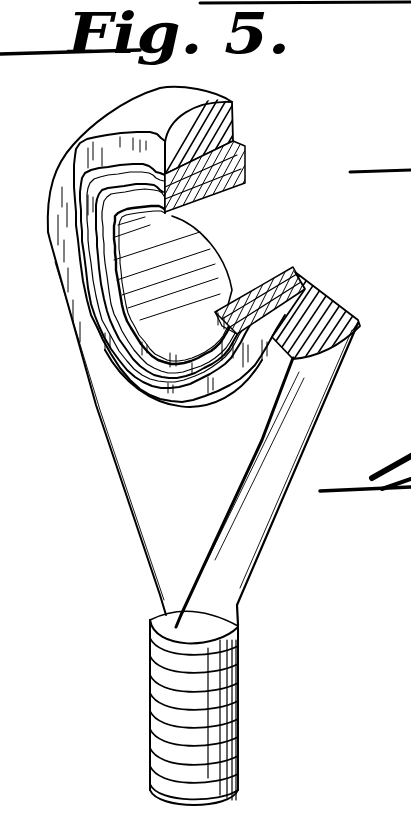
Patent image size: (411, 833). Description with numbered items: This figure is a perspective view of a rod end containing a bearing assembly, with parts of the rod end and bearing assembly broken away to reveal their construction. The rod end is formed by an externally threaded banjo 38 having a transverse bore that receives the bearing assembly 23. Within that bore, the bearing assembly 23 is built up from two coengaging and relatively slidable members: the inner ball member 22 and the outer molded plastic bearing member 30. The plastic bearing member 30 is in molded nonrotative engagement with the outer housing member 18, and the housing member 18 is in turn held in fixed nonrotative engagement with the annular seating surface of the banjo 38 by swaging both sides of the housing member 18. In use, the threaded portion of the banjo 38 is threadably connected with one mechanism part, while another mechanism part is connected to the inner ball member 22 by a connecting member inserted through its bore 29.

The outer housing member 18 is at (232, 150).
The outer molded plastic bearing member 30 is at (233, 167).
The inner ball member 22 is at (235, 184).
The bore 29 is at (197, 267).
The bearing assembly 23 is at (275, 257).
The banjo 38 is at (319, 412).